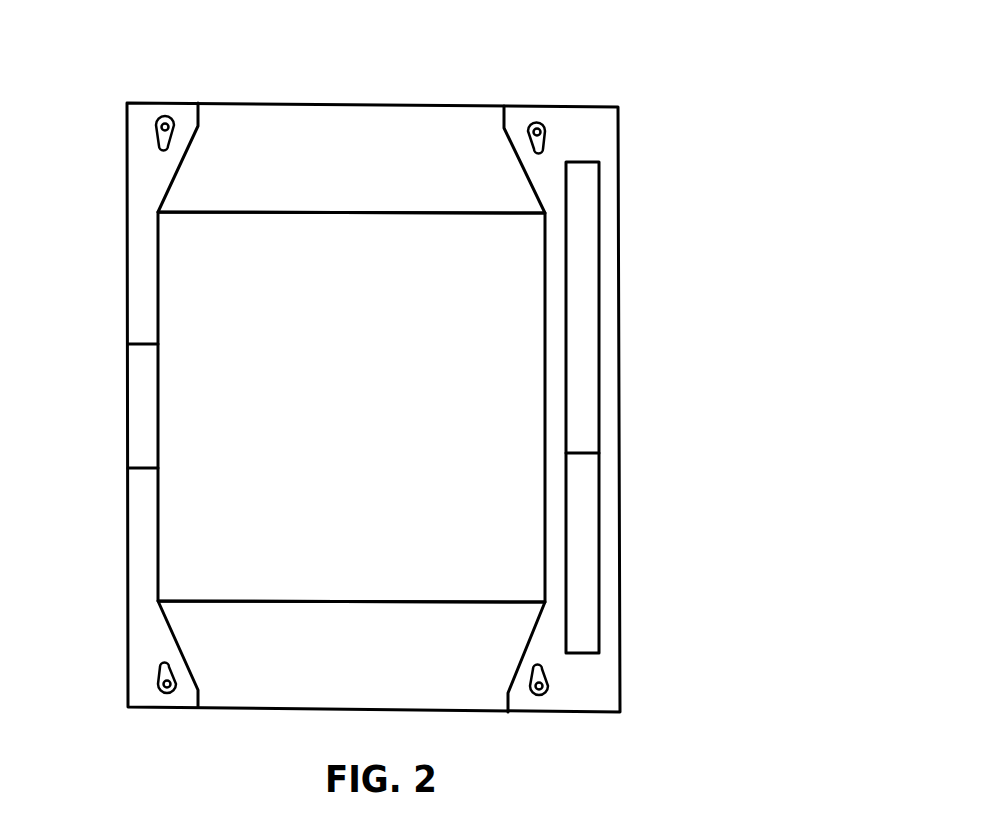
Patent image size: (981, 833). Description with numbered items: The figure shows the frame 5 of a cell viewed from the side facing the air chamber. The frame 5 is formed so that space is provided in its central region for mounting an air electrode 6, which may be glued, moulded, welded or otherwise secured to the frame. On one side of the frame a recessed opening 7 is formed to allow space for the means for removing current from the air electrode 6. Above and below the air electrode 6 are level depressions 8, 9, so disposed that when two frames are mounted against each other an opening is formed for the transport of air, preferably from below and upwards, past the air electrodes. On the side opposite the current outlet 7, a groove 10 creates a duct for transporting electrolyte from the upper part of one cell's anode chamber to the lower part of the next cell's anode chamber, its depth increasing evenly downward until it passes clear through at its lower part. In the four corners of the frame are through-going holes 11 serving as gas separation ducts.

The frame 5 is at (147, 76).
The air electrode 6 is at (510, 379).
The recessed opening 7 is at (140, 411).
The level depression 8 is at (342, 125).
The level depression 9 is at (353, 627).
The groove 10 is at (583, 242).
The through-going holes 11 is at (540, 122).